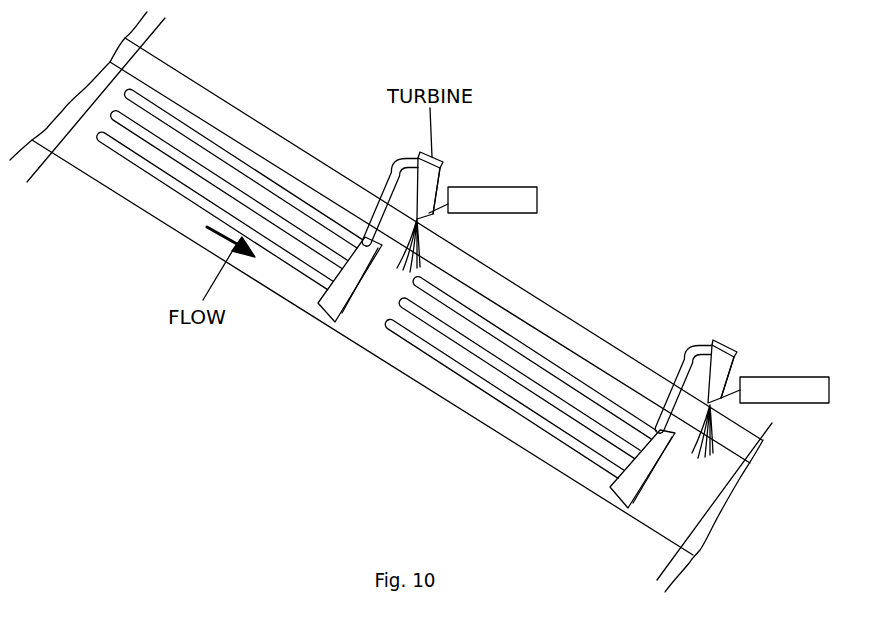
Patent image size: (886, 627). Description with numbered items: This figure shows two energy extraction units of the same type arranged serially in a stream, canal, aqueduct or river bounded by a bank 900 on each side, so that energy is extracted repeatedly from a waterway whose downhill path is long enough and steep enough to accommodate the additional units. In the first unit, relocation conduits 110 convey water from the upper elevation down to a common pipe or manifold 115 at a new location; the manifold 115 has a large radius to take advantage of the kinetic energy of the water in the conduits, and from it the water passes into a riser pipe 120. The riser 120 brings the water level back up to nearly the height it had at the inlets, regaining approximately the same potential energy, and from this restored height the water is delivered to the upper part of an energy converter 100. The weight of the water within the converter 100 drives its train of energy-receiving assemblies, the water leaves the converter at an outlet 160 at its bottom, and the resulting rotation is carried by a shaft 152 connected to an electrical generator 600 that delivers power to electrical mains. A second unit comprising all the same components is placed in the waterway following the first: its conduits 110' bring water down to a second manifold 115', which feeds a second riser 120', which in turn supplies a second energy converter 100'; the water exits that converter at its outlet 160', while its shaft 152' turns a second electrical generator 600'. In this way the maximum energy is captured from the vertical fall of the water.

The bank 900 is at (226, 101).
The relocation conduit 110 is at (229, 188).
The relocation conduit 110' is at (519, 378).
The common pipe or manifold 115 is at (318, 293).
The common pipe or manifold 115' is at (601, 476).
The energy converter 100 is at (399, 166).
The energy converter 100' is at (723, 351).
The riser pipe or conduit 120 is at (385, 193).
The riser pipe or conduit 120' is at (681, 381).
The shaft 152 is at (456, 163).
The shaft 152' is at (757, 353).
The outlet 160 is at (448, 244).
The outlet 160' is at (741, 464).
The electrical generator 600 is at (483, 182).
The electrical generator 600' is at (775, 369).